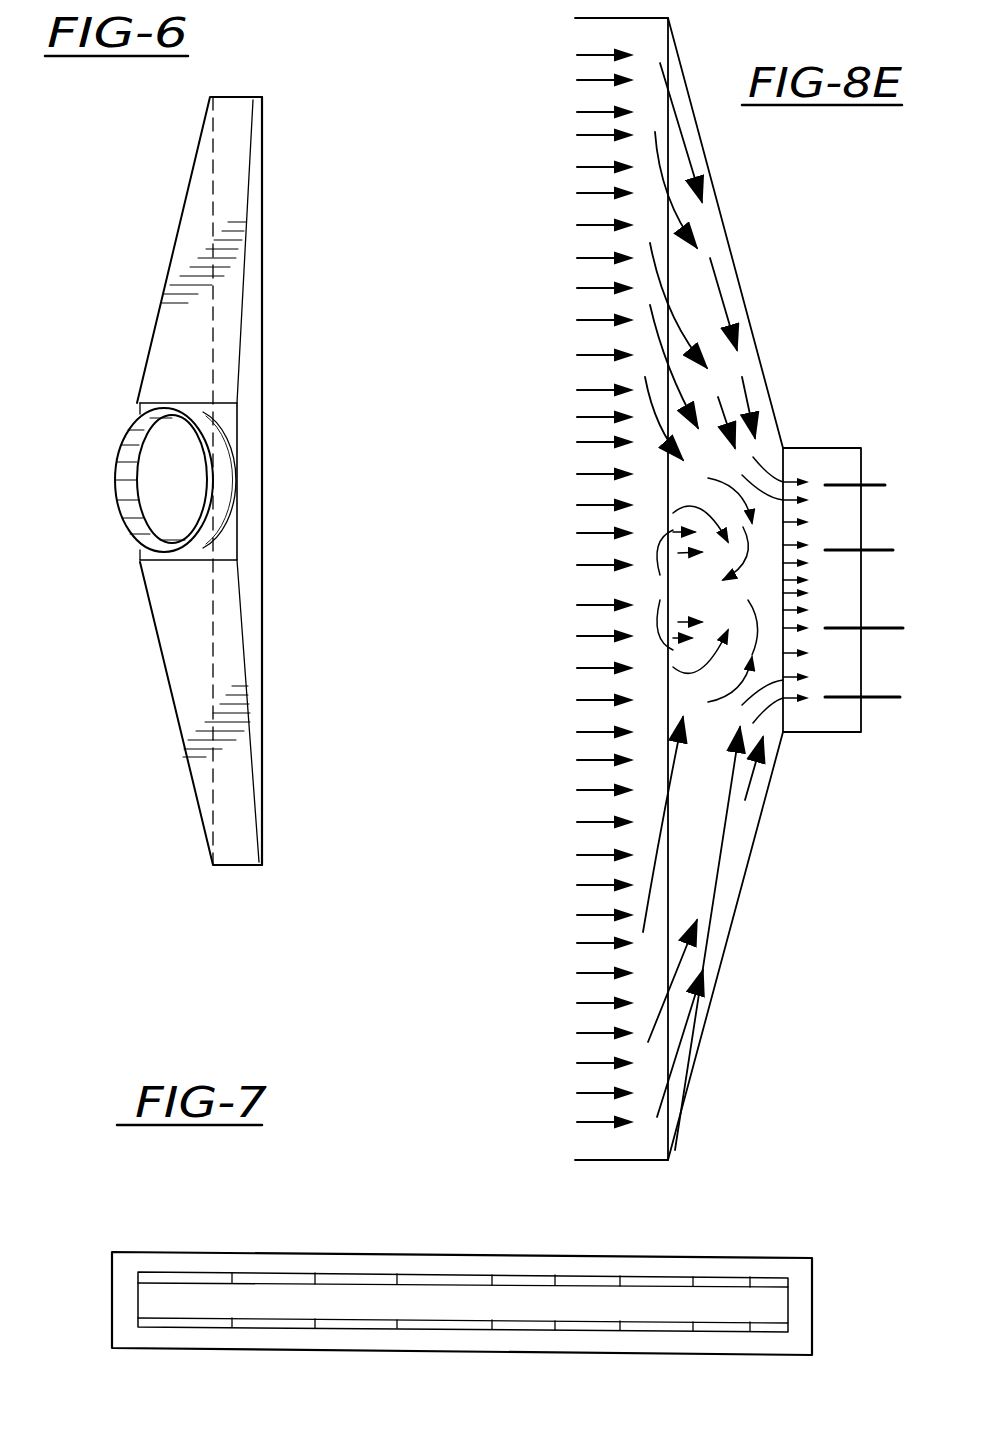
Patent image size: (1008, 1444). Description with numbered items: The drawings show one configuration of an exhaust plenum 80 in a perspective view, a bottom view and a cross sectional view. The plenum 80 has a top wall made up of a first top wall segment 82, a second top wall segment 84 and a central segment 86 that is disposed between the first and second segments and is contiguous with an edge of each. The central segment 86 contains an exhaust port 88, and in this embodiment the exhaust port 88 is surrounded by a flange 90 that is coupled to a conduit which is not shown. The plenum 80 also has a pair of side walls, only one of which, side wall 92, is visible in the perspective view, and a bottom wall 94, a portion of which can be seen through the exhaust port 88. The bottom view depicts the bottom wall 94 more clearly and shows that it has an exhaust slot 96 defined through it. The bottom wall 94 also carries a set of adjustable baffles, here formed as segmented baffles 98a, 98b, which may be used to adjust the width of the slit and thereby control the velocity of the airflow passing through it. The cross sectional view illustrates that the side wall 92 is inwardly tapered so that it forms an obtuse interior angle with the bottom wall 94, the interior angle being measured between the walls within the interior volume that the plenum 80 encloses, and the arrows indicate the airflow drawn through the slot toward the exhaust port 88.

In FIG. 6, the plenum 80 is at (302, 176).
In FIG. 6, the first top wall segment 82 is at (198, 232).
In FIG. 6, the second top wall segment 84 is at (178, 660).
In FIG. 6, the central segment 86 is at (143, 557).
In FIG. 6, the exhaust port 88 is at (165, 448).
In FIG. 6, the flange 90 is at (218, 473).
In FIG. 6, the side wall 92 is at (255, 643).
In FIG. 8E, the side wall 92 is at (737, 880).
In FIG. 7, the bottom wall 94 is at (110, 1300).
In FIG. 8E, the bottom wall 94 is at (660, 1145).
In FIG. 7, the exhaust slot 96 is at (212, 1300).
In FIG. 7, the segmented baffle 98a is at (287, 1278).
In FIG. 7, the segmented baffle 98b is at (288, 1323).